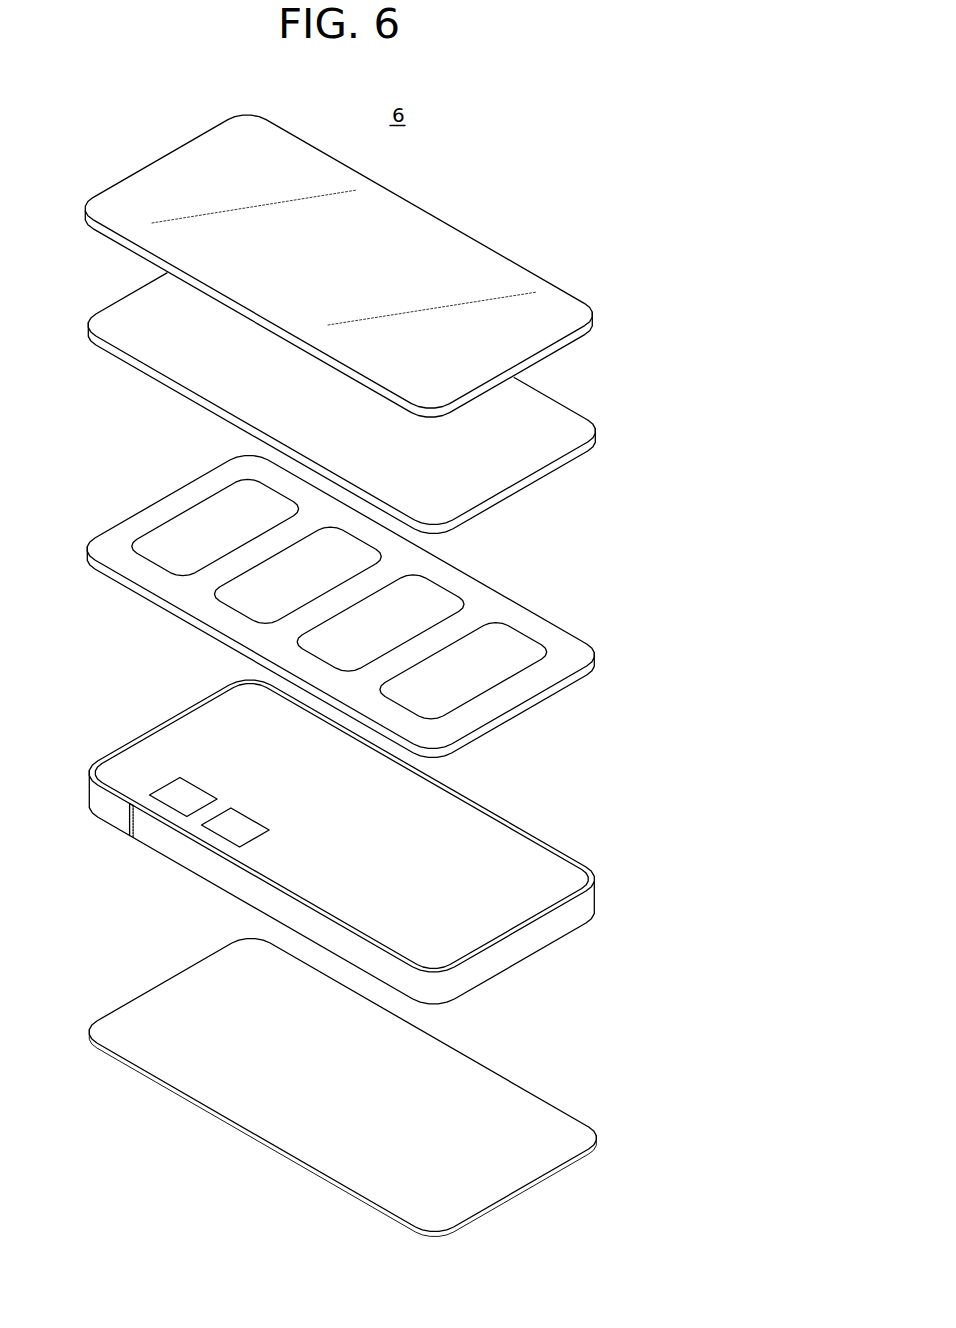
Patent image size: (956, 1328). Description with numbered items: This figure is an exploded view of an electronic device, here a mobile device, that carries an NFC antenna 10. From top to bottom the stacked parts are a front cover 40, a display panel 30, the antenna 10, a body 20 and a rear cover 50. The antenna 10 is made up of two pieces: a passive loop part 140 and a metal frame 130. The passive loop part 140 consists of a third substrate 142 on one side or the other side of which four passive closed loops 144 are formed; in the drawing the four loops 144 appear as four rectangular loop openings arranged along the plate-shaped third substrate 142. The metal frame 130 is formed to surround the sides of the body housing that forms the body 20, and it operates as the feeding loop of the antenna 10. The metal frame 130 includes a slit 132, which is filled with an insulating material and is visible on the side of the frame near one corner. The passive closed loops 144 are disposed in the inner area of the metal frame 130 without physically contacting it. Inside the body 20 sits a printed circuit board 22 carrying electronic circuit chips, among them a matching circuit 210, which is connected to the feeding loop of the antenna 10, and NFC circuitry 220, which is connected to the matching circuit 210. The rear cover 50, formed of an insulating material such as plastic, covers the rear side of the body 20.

The antenna 10 is at (363, 730).
The body 20 is at (359, 842).
The printed circuit board 22 is at (517, 863).
The display panel 30 is at (573, 424).
The front cover 40 is at (573, 304).
The rear cover 50 is at (585, 1110).
The metal frame 130 is at (574, 861).
The slit 132 is at (125, 822).
The passive loop part 140 is at (370, 607).
The third substrate 142 is at (503, 591).
The passive closed loops 144 is at (449, 588).
The matching circuit 210 is at (198, 788).
The NFC circuitry 220 is at (249, 817).